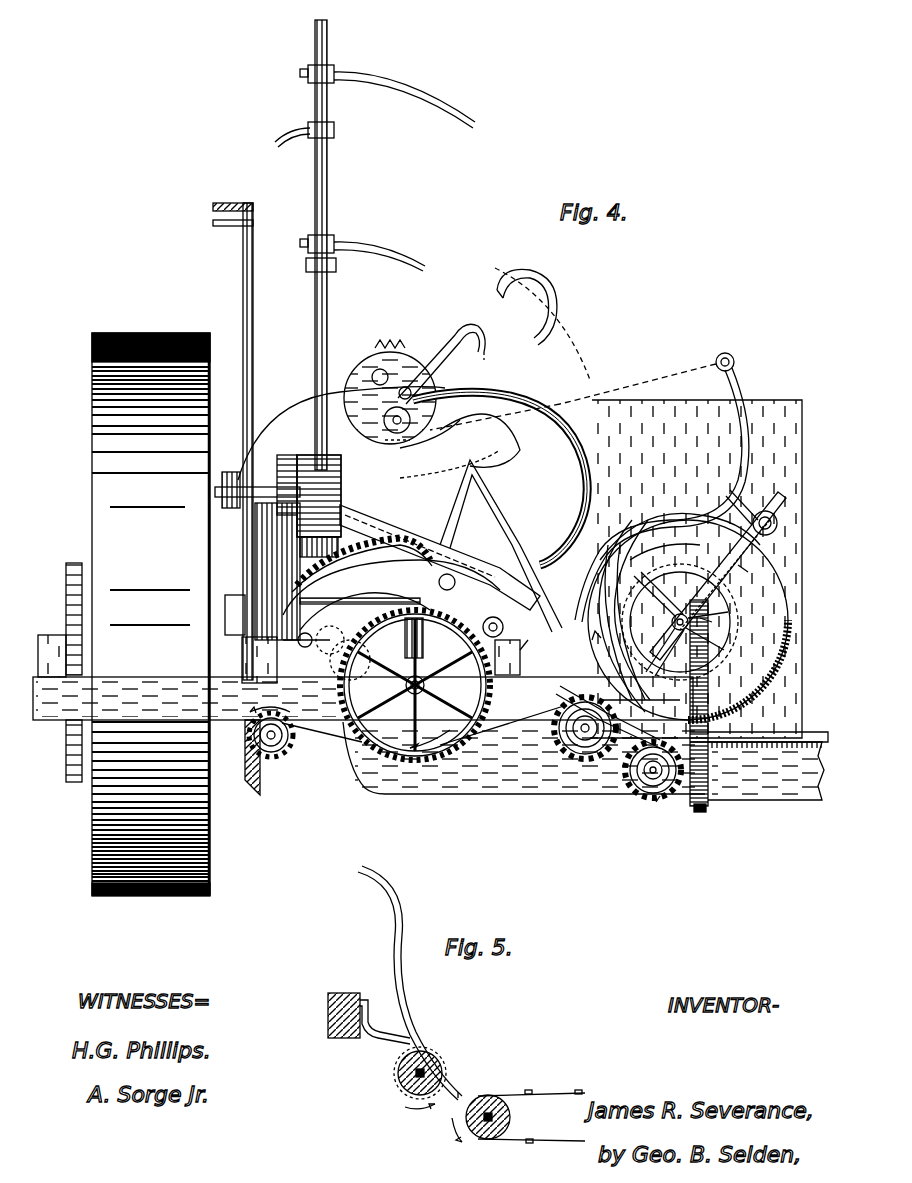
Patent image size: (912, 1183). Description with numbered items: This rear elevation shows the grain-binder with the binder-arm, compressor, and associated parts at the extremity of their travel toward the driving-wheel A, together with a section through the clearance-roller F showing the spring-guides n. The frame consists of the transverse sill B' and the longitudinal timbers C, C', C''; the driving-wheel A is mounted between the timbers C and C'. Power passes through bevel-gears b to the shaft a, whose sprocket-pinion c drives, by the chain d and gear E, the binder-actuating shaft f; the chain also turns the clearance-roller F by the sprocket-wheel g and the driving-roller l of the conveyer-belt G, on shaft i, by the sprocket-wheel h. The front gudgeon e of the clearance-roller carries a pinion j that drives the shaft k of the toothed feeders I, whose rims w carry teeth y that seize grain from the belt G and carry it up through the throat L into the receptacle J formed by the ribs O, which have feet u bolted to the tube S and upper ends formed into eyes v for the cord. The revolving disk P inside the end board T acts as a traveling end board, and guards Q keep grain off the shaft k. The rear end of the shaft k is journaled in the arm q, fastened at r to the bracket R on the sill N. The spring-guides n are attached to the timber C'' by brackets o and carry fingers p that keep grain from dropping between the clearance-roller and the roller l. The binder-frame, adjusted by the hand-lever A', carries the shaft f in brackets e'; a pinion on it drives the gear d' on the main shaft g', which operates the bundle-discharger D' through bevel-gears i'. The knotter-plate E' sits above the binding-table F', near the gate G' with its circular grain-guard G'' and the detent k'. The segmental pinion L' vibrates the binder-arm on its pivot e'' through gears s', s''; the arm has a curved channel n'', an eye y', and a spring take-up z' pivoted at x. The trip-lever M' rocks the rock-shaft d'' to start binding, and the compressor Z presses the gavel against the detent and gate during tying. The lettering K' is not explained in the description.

In FIG. 4, the driving-wheel A is at (151, 614).
In FIG. 4, the hand-lever A' is at (246, 441).
In FIG. 4, the transverse sill B' is at (363, 698).
In FIG. 4, the longitudinal timber C is at (52, 656).
In FIG. 4, the longitudinal timber C' is at (259, 660).
In FIG. 4, the longitudinal timber C'' is at (507, 657).
In FIG. 5, the longitudinal timber C'' is at (344, 1004).
In FIG. 4, the bundle-discharger D' is at (375, 245).
In FIG. 4, the gear E is at (415, 685).
In FIG. 4, the knotter-plate E' is at (440, 557).
In FIG. 4, the binding-table section F' is at (391, 600).
In FIG. 4, the gate G' is at (501, 546).
In FIG. 4, the circular grain-guard G'' is at (535, 640).
In FIG. 4, the curved arm K' is at (512, 416).
In FIG. 4, the segmental pinion L' is at (441, 361).
In FIG. 4, the bundle-sizer or trip-lever M' is at (542, 307).
In FIG. 4, the compressor Z is at (460, 446).
In FIG. 4, the spring take-up z' is at (471, 325).
In FIG. 4, the curved channel n'' is at (573, 397).
In FIG. 4, the end board T is at (696, 569).
In FIG. 4, the revolving disk P is at (688, 620).
In FIG. 4, the guards Q is at (719, 562).
In FIG. 4, the rod or pipe S is at (771, 530).
In FIG. 4, the ribs or curved clearer-bars O is at (662, 495).
In FIG. 4, the eyes v is at (731, 360).
In FIG. 4, the grain-receptacle J is at (633, 494).
In FIG. 4, the feeders I is at (629, 618).
In FIG. 4, the throat L is at (621, 616).
In FIG. 4, the rims of the feeders w is at (680, 536).
In FIG. 4, the feet u is at (742, 509).
In FIG. 4, the arm q is at (747, 574).
In FIG. 4, the fastening point r is at (710, 623).
In FIG. 4, the shaft k is at (681, 624).
In FIG. 4, the pivot x is at (397, 392).
In FIG. 4, the teeth y is at (676, 630).
In FIG. 4, the eye y' is at (608, 717).
In FIG. 4, the spring-guides n is at (569, 535).
In FIG. 5, the spring-guides n is at (410, 983).
In FIG. 4, the bracket R is at (710, 706).
In FIG. 4, the sill N is at (759, 766).
In FIG. 4, the sprocket-wheel g is at (585, 734).
In FIG. 4, the sprocket-wheel h is at (654, 808).
In FIG. 4, the shaft i is at (653, 770).
In FIG. 4, the bevel-gears i' is at (305, 631).
In FIG. 4, the main shaft of the binder g' is at (330, 635).
In FIG. 4, the brackets e' is at (353, 660).
In FIG. 4, the pivot shaft e'' is at (405, 420).
In FIG. 4, the gear s' is at (390, 392).
In FIG. 4, the gear s'' is at (395, 443).
In FIG. 4, the detent k' is at (324, 506).
In FIG. 4, the shaft a is at (271, 739).
In FIG. 4, the bevel-gears b is at (238, 757).
In FIG. 4, the sprocket-pinion c is at (278, 729).
In FIG. 4, the chain d is at (493, 749).
In FIG. 4, the gear d' is at (362, 584).
In FIG. 4, the rock-shaft d'' is at (500, 618).
In FIG. 4, the front gudgeon e is at (398, 673).
In FIG. 4, the binder-actuating shaft f is at (429, 645).
In FIG. 4, the pinion j is at (486, 589).
In FIG. 5, the clearance-roller F is at (408, 1078).
In FIG. 5, the conveyer-belt G is at (531, 1106).
In FIG. 5, the brackets o is at (385, 1022).
In FIG. 5, the projecting fingers p is at (464, 1086).
In FIG. 5, the driving-roller l is at (486, 1118).